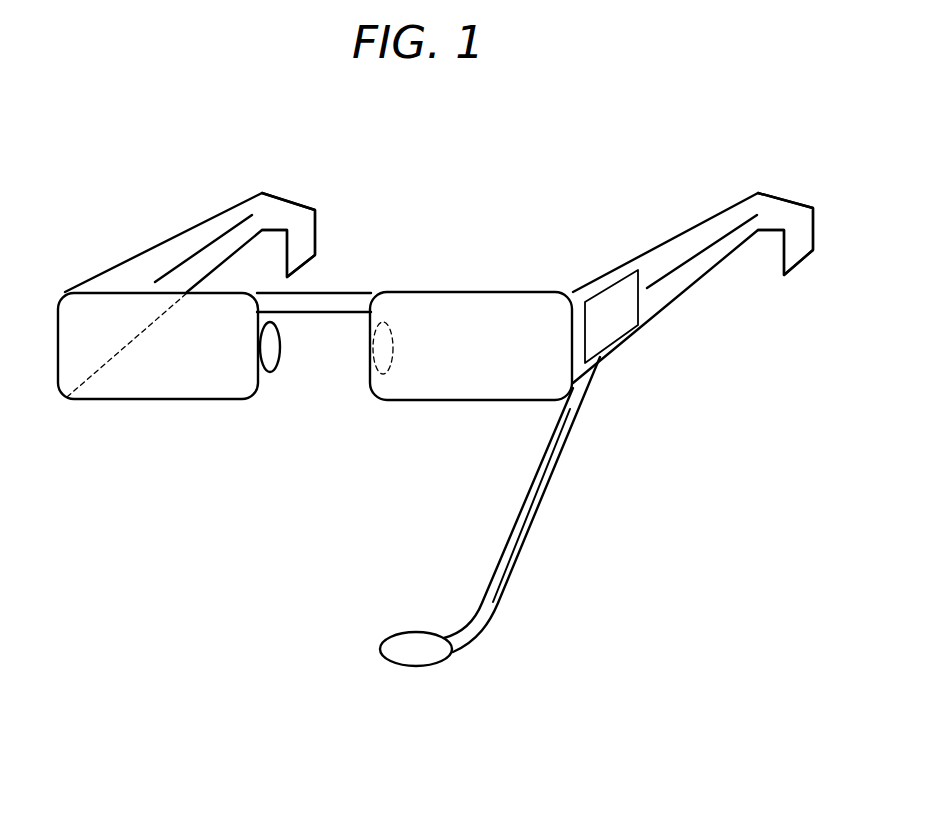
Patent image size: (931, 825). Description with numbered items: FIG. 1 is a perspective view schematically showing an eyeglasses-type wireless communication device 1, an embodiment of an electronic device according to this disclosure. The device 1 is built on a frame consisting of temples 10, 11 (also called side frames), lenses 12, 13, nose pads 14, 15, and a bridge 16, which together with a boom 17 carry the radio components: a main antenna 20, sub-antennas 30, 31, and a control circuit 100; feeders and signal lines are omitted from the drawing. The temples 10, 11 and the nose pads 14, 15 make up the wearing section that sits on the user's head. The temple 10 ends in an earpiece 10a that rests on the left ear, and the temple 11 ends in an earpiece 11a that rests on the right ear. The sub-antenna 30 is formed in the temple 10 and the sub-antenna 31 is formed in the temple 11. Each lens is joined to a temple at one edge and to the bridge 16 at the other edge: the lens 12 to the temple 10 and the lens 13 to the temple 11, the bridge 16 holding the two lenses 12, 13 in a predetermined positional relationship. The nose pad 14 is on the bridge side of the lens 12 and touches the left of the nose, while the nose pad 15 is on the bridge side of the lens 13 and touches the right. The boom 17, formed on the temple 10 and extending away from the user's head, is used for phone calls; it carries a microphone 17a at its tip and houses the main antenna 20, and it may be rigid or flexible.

The eyeglasses-type wireless communication device 1 is at (453, 168).
The temple 10 is at (690, 228).
The earpiece 10a is at (783, 208).
The temple 11 is at (155, 248).
The earpiece 11a is at (280, 210).
The lens 12 is at (483, 357).
The lens 13 is at (168, 358).
The nose pad 14 is at (388, 375).
The nose pad 15 is at (273, 373).
The bridge 16 is at (333, 291).
The boom 17 is at (593, 432).
The microphone 17a is at (420, 657).
The main antenna 20 is at (527, 515).
The sub-antenna 30 is at (702, 252).
The sub-antenna 31 is at (207, 245).
The control circuit 100 is at (612, 322).